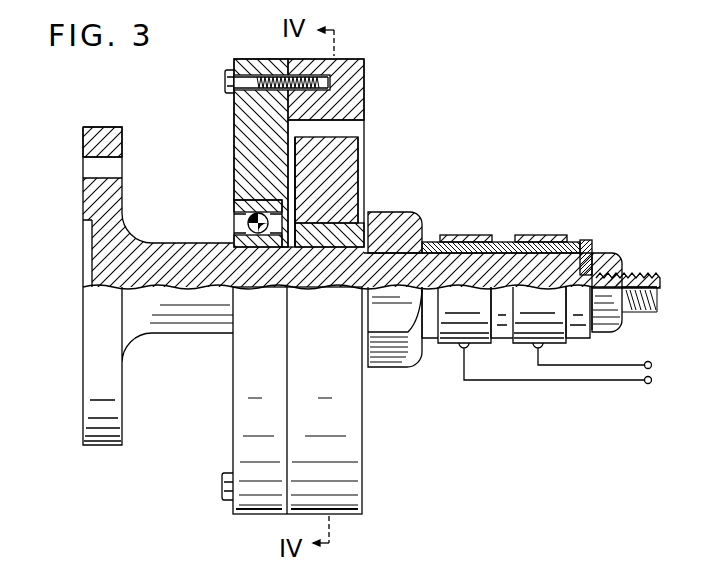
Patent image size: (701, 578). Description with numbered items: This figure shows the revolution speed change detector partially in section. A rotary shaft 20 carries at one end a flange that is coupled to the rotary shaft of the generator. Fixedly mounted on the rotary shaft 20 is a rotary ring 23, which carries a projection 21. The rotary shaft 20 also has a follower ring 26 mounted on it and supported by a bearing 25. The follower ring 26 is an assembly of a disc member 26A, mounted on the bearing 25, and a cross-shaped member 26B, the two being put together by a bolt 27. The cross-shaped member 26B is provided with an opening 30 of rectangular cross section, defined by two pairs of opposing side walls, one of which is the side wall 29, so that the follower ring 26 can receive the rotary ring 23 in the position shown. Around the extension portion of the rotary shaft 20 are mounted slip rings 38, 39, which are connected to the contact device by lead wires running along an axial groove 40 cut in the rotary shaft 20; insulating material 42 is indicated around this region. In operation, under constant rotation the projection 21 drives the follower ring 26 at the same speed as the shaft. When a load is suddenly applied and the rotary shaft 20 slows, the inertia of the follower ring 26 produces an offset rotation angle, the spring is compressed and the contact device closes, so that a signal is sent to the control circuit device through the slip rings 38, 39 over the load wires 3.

The load wires 3 is at (604, 366).
The rotary shaft 20 is at (92, 262).
The projection 21 is at (350, 180).
The rotary ring 23 is at (314, 217).
The bearing 25 is at (240, 215).
The follower ring 26 is at (294, 286).
The disc member 26A is at (246, 170).
The cross-shaped member 26B is at (352, 100).
The bolt 27 is at (226, 78).
The side wall 29 is at (346, 121).
The opening 30 is at (297, 128).
The slip ring 38 is at (458, 235).
The slip ring 39 is at (533, 235).
The axial groove 40 is at (527, 258).
The insulating material 42 is at (415, 233).